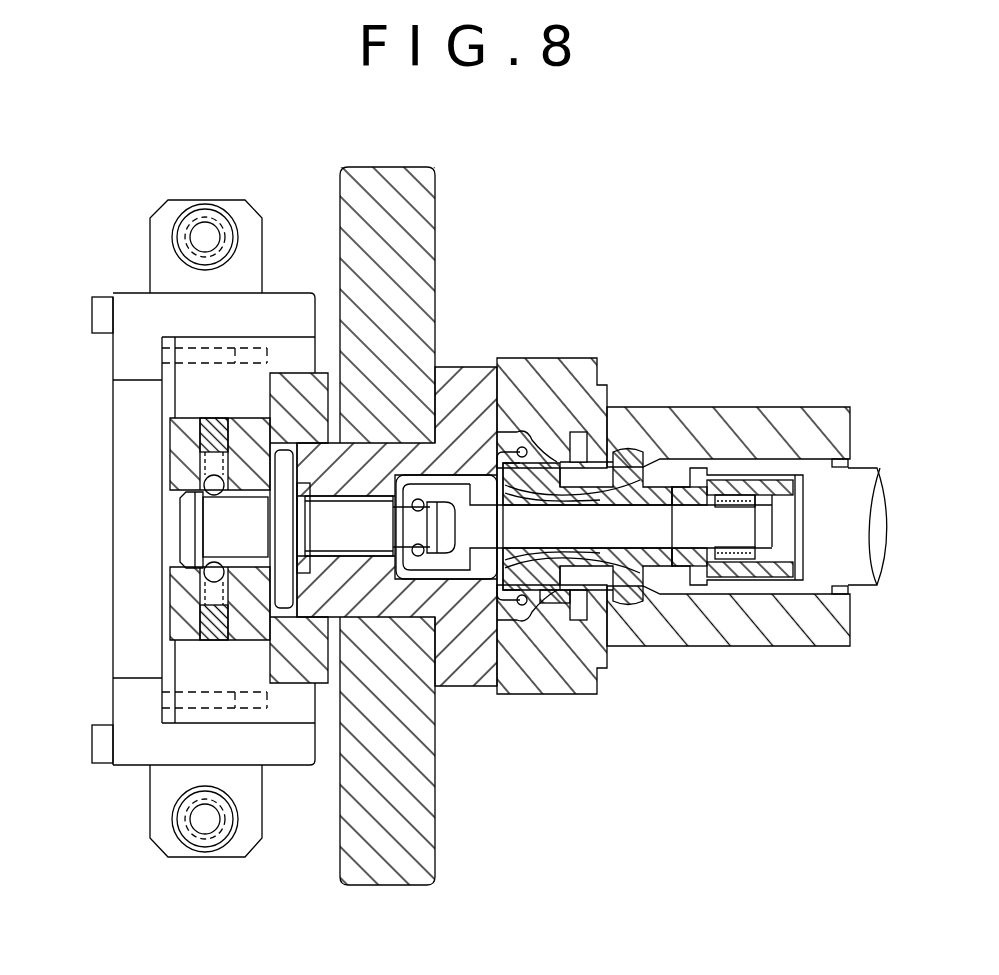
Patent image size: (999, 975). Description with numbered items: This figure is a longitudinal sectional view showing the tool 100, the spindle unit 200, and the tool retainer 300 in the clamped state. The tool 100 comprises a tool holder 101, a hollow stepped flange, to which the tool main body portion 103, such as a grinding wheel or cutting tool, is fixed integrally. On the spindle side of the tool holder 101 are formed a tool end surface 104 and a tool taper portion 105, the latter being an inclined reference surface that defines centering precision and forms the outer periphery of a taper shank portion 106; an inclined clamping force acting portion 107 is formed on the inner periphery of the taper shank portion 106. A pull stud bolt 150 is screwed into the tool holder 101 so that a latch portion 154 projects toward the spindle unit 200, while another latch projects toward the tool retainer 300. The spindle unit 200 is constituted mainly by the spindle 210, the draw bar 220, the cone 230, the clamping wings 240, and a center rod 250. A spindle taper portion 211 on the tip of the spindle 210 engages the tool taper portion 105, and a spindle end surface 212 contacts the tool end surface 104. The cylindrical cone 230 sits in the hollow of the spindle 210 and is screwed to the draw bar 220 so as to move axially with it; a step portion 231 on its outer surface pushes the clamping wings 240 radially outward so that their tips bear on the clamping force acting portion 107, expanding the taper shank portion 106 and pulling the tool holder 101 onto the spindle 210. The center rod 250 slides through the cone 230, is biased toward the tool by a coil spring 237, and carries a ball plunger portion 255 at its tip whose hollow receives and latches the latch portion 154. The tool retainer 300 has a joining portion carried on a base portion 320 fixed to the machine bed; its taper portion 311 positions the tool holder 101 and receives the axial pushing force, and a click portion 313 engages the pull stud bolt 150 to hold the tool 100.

The tool 100 is at (520, 146).
The tool holder 101 is at (450, 378).
The tool main body portion 103 is at (345, 190).
The tool end surface 104 is at (515, 393).
The tool taper portion 105 is at (568, 440).
The taper shank portion 106 is at (567, 623).
The clamping force acting portion 107 is at (552, 615).
The pull stud bolt 150 is at (213, 520).
The latch portion 154 is at (410, 529).
The spindle unit 200 is at (775, 272).
The spindle 210 is at (786, 428).
The spindle taper portion 211 is at (593, 367).
The spindle end surface 212 is at (520, 395).
The draw bar 220 is at (875, 508).
The cone 230 is at (618, 505).
The step portion 231 is at (537, 503).
The coil spring 237 is at (748, 512).
The clamping wing 240 is at (645, 603).
The center rod 250 is at (660, 522).
The ball plunger portion 255 is at (445, 563).
The tool retainer 300 is at (90, 259).
The taper portion 311 is at (272, 410).
The click portion 313 is at (213, 468).
The base portion 320 is at (165, 300).